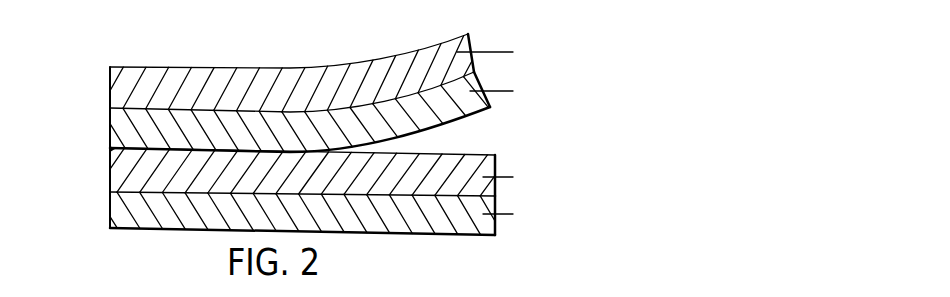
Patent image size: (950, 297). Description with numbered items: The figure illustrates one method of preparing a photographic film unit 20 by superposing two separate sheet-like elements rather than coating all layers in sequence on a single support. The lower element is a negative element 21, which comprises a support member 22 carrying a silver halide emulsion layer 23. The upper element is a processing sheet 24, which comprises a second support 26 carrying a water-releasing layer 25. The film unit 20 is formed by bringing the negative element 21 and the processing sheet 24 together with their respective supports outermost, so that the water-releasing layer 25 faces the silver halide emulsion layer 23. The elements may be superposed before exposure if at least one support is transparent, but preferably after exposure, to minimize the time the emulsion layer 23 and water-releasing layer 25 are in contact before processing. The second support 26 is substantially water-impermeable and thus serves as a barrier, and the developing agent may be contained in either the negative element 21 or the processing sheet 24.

The film unit 20 is at (270, 64).
The negative element 21 is at (90, 150).
The support member 22 is at (124, 212).
The silver halide emulsion layer 23 is at (120, 171).
The processing sheet 24 is at (90, 67).
The water-releasing layer 25 is at (118, 130).
The second support 26 is at (116, 87).